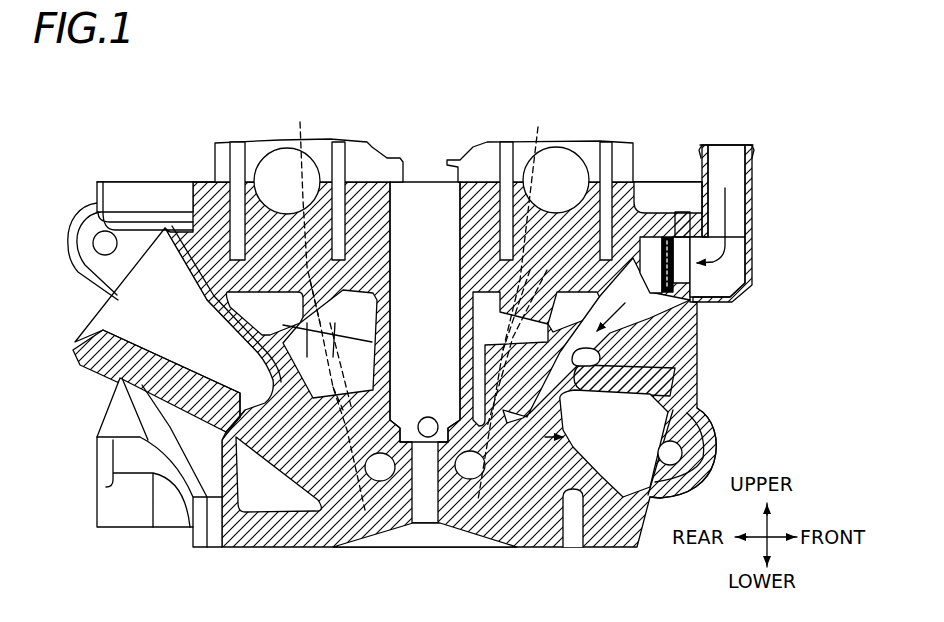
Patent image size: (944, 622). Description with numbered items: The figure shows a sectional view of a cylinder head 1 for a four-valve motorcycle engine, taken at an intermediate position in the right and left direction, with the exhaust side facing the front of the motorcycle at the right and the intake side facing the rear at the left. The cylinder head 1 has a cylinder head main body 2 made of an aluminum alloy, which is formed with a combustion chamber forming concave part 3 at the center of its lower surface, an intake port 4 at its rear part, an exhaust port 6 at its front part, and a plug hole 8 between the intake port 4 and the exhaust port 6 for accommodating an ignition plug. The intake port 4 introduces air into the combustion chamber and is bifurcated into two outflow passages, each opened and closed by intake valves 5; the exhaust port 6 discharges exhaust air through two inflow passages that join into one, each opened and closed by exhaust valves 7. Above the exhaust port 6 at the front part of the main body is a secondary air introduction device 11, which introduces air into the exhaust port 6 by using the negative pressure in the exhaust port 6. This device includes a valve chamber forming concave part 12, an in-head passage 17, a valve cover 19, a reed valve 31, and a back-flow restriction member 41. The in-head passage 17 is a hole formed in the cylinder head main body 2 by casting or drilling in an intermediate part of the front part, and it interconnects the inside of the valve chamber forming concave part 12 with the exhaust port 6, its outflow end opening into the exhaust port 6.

The cylinder head 1 is at (194, 104).
The cylinder head main body 2 is at (365, 182).
The combustion chamber forming concave part 3 is at (367, 537).
The intake port 4 is at (104, 340).
The intake valves 5 is at (330, 307).
The exhaust port 6 is at (651, 495).
The exhaust valves 7 is at (512, 303).
The plug hole 8 is at (458, 232).
The secondary air introduction device 11 is at (751, 196).
The valve chamber forming concave part 12 is at (653, 205).
The in-head passage 17 is at (650, 362).
The valve cover 19 is at (752, 233).
The reed valve 31 is at (681, 230).
The back-flow restriction member 41 is at (668, 243).